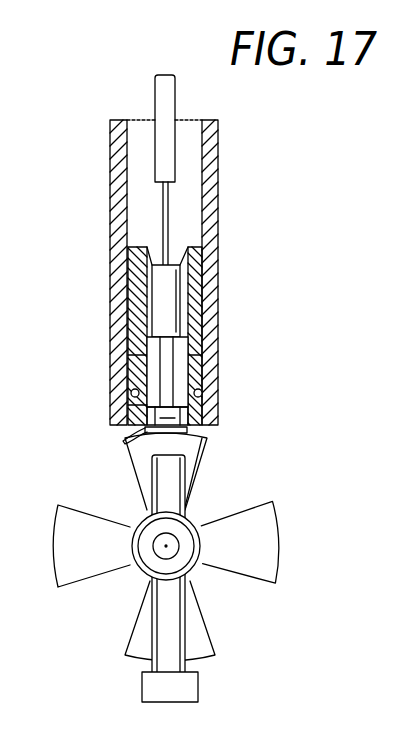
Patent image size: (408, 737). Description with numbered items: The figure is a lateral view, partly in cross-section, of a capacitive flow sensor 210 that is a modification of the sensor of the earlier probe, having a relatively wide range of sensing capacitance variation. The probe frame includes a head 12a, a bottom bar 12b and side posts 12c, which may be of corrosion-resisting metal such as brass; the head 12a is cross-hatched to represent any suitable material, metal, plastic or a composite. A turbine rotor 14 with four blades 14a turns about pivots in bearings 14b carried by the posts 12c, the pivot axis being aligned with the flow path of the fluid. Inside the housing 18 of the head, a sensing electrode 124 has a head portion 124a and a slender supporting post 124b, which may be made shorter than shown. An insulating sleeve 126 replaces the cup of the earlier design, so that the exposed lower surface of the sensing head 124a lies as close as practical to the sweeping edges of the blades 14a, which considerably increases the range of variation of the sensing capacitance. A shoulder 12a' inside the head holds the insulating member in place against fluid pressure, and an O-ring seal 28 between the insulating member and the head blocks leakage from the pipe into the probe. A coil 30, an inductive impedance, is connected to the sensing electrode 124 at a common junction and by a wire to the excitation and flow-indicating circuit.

The actuator assembly 210 is at (236, 205).
The housing 18 is at (110, 221).
The coil 30 is at (157, 297).
The shoulder 12a' is at (239, 342).
The insulating sleeve 126 is at (137, 358).
The slender supporting post 124b is at (185, 357).
The head 12a is at (93, 407).
The O-ring seal 28 is at (304, 381).
The head portion 124a is at (123, 440).
The sensing electrode 124 is at (187, 431).
The bearings 14b is at (147, 525).
The blades 14a is at (304, 463).
The side posts 12c is at (165, 605).
The turbine rotor 14 is at (183, 557).
The bottom bar 12b is at (142, 690).